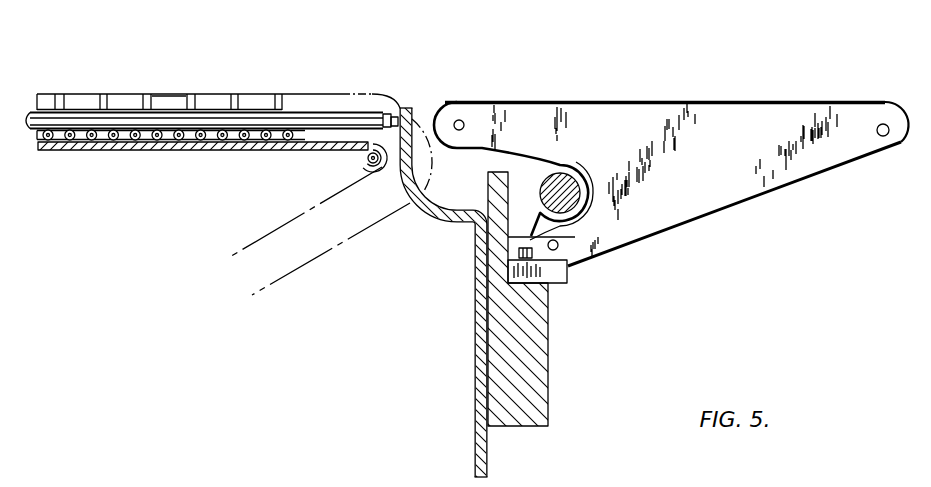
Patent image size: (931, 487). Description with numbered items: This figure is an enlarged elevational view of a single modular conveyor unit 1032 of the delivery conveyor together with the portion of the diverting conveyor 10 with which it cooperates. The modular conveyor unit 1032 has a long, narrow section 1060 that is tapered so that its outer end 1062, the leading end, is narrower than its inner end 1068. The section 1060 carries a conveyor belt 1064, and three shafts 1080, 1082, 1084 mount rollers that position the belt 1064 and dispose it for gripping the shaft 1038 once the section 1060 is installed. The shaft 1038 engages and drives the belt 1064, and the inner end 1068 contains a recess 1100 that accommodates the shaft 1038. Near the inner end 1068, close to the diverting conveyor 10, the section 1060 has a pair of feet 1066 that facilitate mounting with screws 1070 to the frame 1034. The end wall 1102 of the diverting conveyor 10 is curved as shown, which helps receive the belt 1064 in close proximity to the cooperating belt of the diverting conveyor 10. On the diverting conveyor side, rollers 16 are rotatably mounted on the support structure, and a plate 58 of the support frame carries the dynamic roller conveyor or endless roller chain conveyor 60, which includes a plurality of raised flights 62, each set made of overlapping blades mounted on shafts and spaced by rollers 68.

The diverting conveyor 10 is at (264, 90).
The rollers 16 is at (77, 118).
The plate 58 is at (121, 152).
The roller conveyor 60 is at (157, 90).
The raised flights 62 is at (245, 95).
The rollers 68 is at (207, 141).
The modular conveyor unit 1032 is at (600, 88).
The frame 1034 is at (548, 352).
The shaft 1038 is at (535, 182).
The section 1060 is at (694, 166).
The outer end 1062 is at (868, 110).
The conveyor belt 1064 is at (715, 100).
The feet 1066 is at (562, 284).
The inner end 1068 is at (481, 112).
The screws 1070 is at (510, 241).
The shaft 1080 is at (458, 120).
The shaft 1082 is at (886, 136).
The shaft 1084 is at (558, 247).
The recess 1100 is at (574, 158).
The end wall 1102 is at (473, 334).